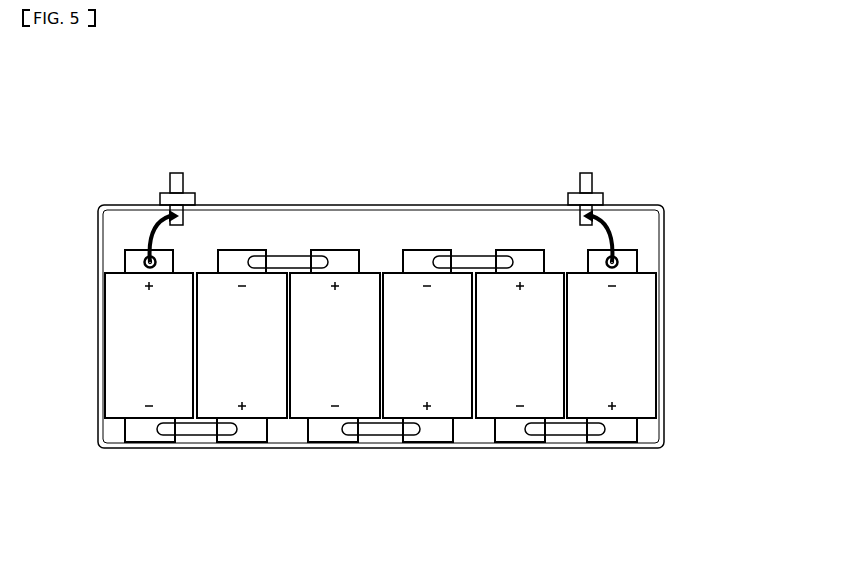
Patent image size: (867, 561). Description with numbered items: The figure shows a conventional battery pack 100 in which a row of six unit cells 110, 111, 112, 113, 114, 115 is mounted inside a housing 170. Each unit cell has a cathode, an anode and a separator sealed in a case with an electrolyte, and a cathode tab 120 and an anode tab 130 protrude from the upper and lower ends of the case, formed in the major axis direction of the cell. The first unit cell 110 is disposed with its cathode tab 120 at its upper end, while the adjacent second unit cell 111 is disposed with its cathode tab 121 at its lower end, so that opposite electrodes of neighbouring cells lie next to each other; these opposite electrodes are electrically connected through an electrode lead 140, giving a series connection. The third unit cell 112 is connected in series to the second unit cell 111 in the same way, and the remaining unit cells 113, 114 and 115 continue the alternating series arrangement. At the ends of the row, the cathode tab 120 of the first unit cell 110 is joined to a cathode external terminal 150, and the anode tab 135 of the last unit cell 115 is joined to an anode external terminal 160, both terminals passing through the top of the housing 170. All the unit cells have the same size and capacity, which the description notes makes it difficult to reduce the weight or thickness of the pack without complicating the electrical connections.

The battery module 100 is at (73, 105).
The first unit cell 110 is at (135, 350).
The second unit cell 111 is at (233, 385).
The third unit cell 112 is at (347, 307).
The unit cell 113 is at (417, 385).
The unit cell 114 is at (507, 385).
The last unit cell 115 is at (635, 360).
The cathode tab 120 is at (173, 260).
The cathode tab 121 is at (240, 432).
The anode tab 130 is at (147, 432).
The electrode tab 135 is at (637, 261).
The electrode lead 140 is at (193, 430).
The cathode external terminal 150 is at (186, 195).
The anode external terminal 160 is at (597, 194).
The housing 170 is at (663, 407).